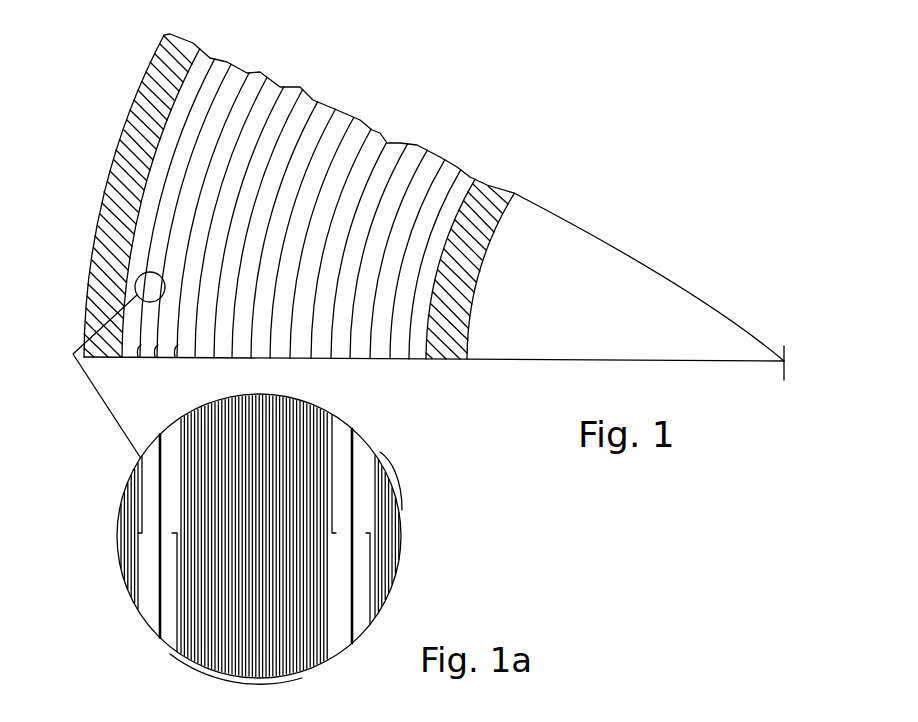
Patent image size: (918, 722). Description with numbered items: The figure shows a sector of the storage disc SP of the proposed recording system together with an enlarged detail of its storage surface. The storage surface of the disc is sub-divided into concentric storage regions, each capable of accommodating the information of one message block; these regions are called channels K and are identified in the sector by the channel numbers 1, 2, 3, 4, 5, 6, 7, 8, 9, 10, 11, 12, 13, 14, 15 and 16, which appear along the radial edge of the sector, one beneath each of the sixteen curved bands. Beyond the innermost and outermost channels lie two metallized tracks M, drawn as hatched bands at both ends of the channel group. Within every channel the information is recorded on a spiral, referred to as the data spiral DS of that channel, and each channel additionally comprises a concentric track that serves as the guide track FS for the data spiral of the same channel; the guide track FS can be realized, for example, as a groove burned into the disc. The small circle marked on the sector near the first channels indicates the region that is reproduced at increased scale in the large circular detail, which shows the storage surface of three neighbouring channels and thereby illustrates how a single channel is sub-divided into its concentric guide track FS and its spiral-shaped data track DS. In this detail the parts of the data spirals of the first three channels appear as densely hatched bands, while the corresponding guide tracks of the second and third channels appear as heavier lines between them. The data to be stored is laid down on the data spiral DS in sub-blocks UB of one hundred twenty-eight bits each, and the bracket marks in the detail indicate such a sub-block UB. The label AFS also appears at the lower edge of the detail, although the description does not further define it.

In FIG. 1, the channel K is at (288, 230).
In FIG. 1, the metallized track M is at (120, 176).
In FIG. 1, the storage disc SP is at (653, 362).
In FIG. 1, the guide track FS is at (176, 362).
In FIG. 1, the channel number 1 is at (168, 219).
In FIG. 1, the channel number 2 is at (186, 228).
In FIG. 1, the channel number 3 is at (205, 226).
In FIG. 1, the channel number 4 is at (223, 234).
In FIG. 1, the channel number 5 is at (241, 233).
In FIG. 1, the channel number 6 is at (260, 241).
In FIG. 1, the channel number 7 is at (277, 241).
In FIG. 1, the channel number 8 is at (295, 250).
In FIG. 1, the channel number 9 is at (315, 248).
In FIG. 1, the channel number 10 is at (331, 260).
In FIG. 1, the channel number 11 is at (349, 261).
In FIG. 1, the channel number 12 is at (369, 268).
In FIG. 1, the channel number 13 is at (388, 265).
In FIG. 1, the channel number 14 is at (407, 276).
In FIG. 1, the channel number 15 is at (424, 275).
In FIG. 1, the channel number 16 is at (442, 285).
In FIG. 1a, the data spiral DS is at (340, 414).
In FIG. 1a, the sub-block UB is at (177, 550).
In FIG. 1a, the outer partition wall AFS is at (304, 720).